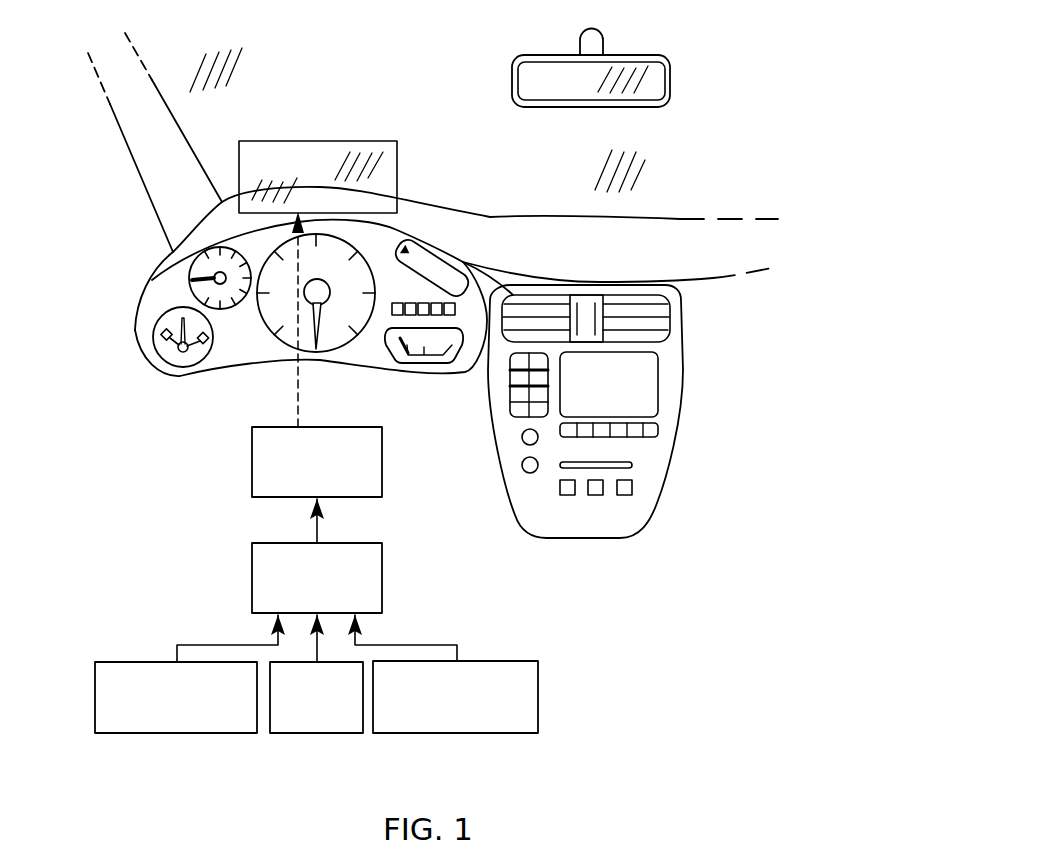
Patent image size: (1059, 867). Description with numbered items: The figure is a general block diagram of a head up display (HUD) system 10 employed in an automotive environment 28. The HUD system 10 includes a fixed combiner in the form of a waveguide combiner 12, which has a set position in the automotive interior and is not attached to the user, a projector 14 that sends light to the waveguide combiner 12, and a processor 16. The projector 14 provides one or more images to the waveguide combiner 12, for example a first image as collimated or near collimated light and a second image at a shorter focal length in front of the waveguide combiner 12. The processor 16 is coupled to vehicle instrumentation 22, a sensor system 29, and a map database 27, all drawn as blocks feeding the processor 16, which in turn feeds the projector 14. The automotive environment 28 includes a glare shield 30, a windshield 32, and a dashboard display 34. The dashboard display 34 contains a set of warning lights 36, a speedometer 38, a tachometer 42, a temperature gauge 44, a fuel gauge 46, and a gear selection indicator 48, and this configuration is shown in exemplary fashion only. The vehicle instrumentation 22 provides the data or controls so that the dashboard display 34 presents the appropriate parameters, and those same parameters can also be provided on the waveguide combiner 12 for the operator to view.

The head up display (HUD) system 10 is at (563, 575).
The waveguide combiner 12 is at (376, 140).
The projector 14 is at (252, 443).
The processor 16 is at (252, 558).
The vehicle instrumentation 22 is at (417, 733).
The map database 27 is at (130, 733).
The automotive environment 28 is at (484, 238).
The sensor system 29 is at (300, 733).
The glare shield 30 is at (675, 229).
The windshield 32 is at (280, 107).
The dashboard display 34 is at (167, 375).
The set of warning lights 36 is at (388, 308).
The speedometer 38 is at (363, 262).
The tachometer 42 is at (189, 282).
The temperature gauge 44 is at (153, 330).
The fuel gauge 46 is at (428, 363).
The gear selection indicator 48 is at (428, 247).